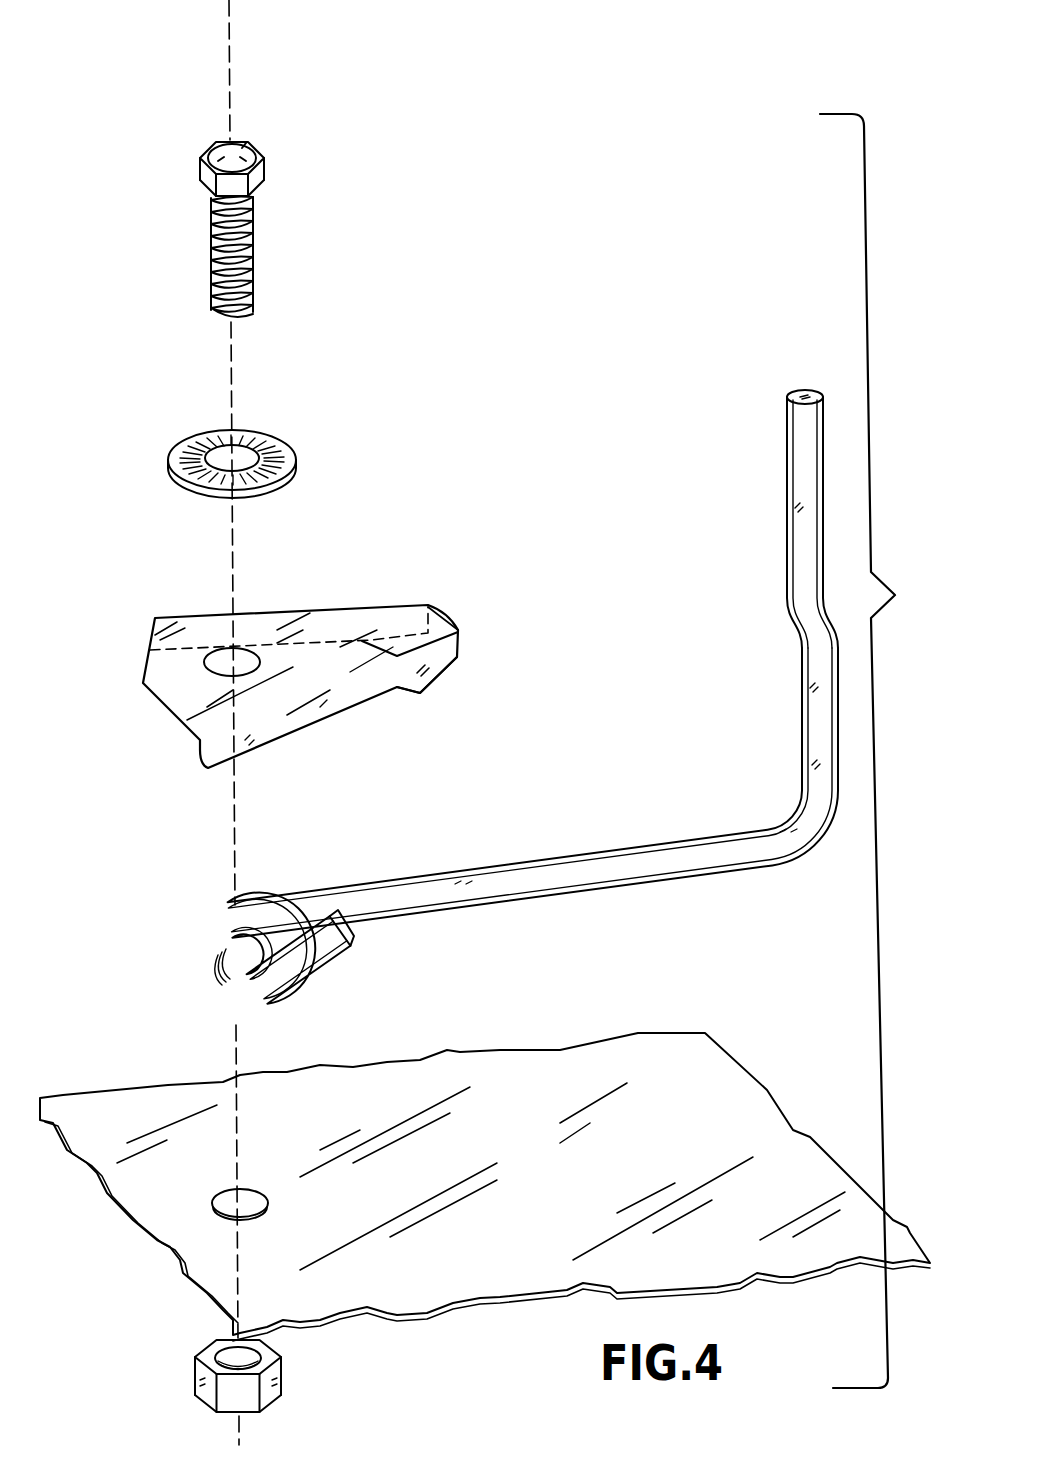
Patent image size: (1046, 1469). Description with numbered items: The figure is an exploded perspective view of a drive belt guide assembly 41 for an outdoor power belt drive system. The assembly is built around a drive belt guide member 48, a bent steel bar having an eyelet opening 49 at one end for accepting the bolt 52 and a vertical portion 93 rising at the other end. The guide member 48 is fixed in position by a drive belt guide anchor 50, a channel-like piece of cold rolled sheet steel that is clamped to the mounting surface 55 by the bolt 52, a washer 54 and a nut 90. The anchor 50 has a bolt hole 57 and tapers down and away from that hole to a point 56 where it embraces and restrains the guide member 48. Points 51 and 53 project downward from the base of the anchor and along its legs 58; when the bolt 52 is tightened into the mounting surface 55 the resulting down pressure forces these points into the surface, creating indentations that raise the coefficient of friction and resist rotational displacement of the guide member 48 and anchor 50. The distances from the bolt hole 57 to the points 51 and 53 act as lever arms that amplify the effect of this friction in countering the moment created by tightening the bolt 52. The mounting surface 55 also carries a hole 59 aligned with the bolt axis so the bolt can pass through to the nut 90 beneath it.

The drive belt guide assembly 41 is at (872, 751).
The drive belt guide member 48 is at (725, 909).
The eyelet opening 49 is at (252, 947).
The drive belt guide anchor 50 is at (318, 578).
The point 51 is at (423, 693).
The bolt 52 is at (247, 227).
The point 53 is at (397, 657).
The washer 54 is at (278, 443).
The mounting surface 55 is at (678, 1077).
The point 56 is at (437, 618).
The bolt hole 57 is at (222, 662).
The legs 58 is at (282, 720).
The bolt hole in mounting plate 59 is at (233, 1217).
The nut 90 is at (277, 1367).
The vertical portion 93 is at (817, 665).